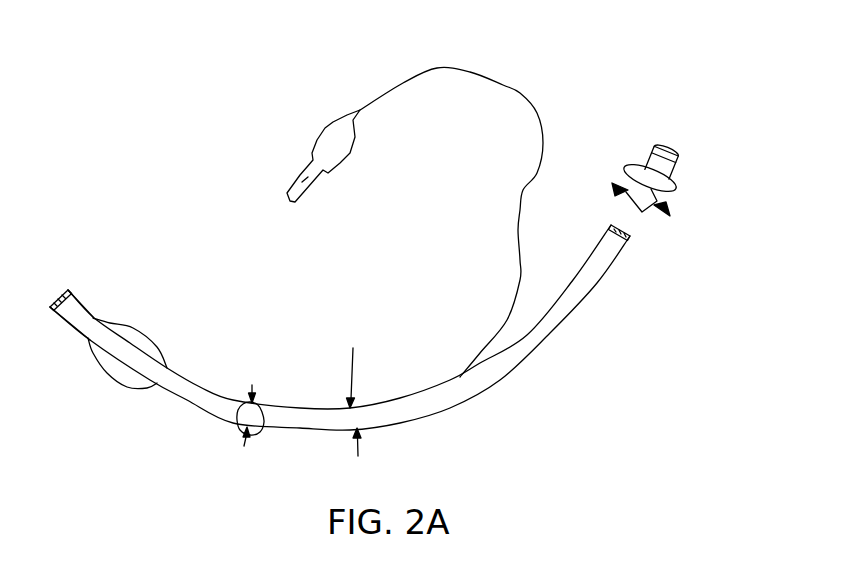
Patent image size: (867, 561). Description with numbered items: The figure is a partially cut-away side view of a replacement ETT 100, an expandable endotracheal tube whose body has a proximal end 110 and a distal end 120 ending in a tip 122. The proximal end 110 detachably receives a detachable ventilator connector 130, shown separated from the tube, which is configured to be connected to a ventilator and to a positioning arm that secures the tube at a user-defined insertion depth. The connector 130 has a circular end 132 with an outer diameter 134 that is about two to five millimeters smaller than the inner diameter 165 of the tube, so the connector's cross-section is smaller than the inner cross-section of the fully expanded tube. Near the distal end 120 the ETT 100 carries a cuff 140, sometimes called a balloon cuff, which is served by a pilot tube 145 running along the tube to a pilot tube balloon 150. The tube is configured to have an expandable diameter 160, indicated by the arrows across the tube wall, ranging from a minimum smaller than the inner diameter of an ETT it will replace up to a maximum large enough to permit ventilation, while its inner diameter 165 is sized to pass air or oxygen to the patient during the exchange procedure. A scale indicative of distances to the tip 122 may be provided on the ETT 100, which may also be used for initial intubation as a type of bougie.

The replacement ETT 100 is at (538, 352).
The proximal end 110 is at (632, 236).
The distal end 120 is at (54, 308).
The tip 122 is at (55, 289).
The detachable ventilator connector 130 is at (610, 156).
The circular end 132 is at (618, 195).
The outer diameter 134 is at (616, 180).
The cuff 140 is at (120, 388).
The pilot tube 145 is at (519, 92).
The pilot tube balloon 150 is at (328, 120).
The expandable diameter 160 is at (357, 391).
The inner diameter 165 is at (251, 425).